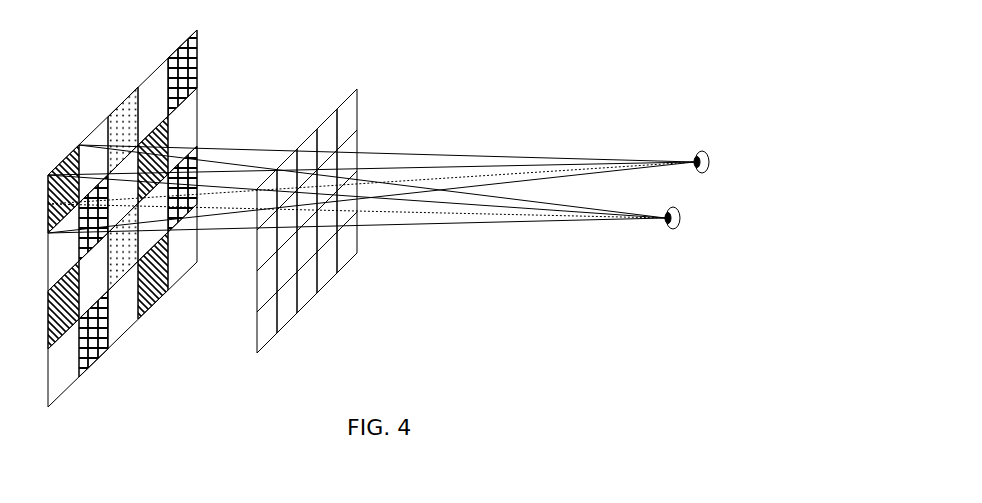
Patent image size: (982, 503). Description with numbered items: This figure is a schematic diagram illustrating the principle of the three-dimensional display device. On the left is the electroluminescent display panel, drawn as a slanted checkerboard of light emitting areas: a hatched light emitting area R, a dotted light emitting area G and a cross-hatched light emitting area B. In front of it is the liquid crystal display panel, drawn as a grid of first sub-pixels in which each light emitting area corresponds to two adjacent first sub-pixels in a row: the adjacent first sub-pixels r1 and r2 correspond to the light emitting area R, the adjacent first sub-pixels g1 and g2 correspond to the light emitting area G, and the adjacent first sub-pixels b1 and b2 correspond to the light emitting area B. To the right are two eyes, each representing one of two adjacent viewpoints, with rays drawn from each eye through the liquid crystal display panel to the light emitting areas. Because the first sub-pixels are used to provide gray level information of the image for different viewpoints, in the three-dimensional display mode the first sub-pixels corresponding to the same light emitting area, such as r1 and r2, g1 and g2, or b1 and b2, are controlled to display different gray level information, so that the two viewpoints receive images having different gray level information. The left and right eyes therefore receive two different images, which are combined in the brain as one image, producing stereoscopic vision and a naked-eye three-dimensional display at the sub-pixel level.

The light emitting area R is at (108, 232).
The light emitting area G is at (123, 189).
The light emitting area B is at (138, 203).
The first sub-pixel r1 is at (297, 231).
The first sub-pixel r2 is at (317, 211).
The first sub-pixel g1 is at (307, 200).
The first sub-pixel g2 is at (297, 231).
The first sub-pixel b1 is at (317, 211).
The first sub-pixel b2 is at (307, 241).